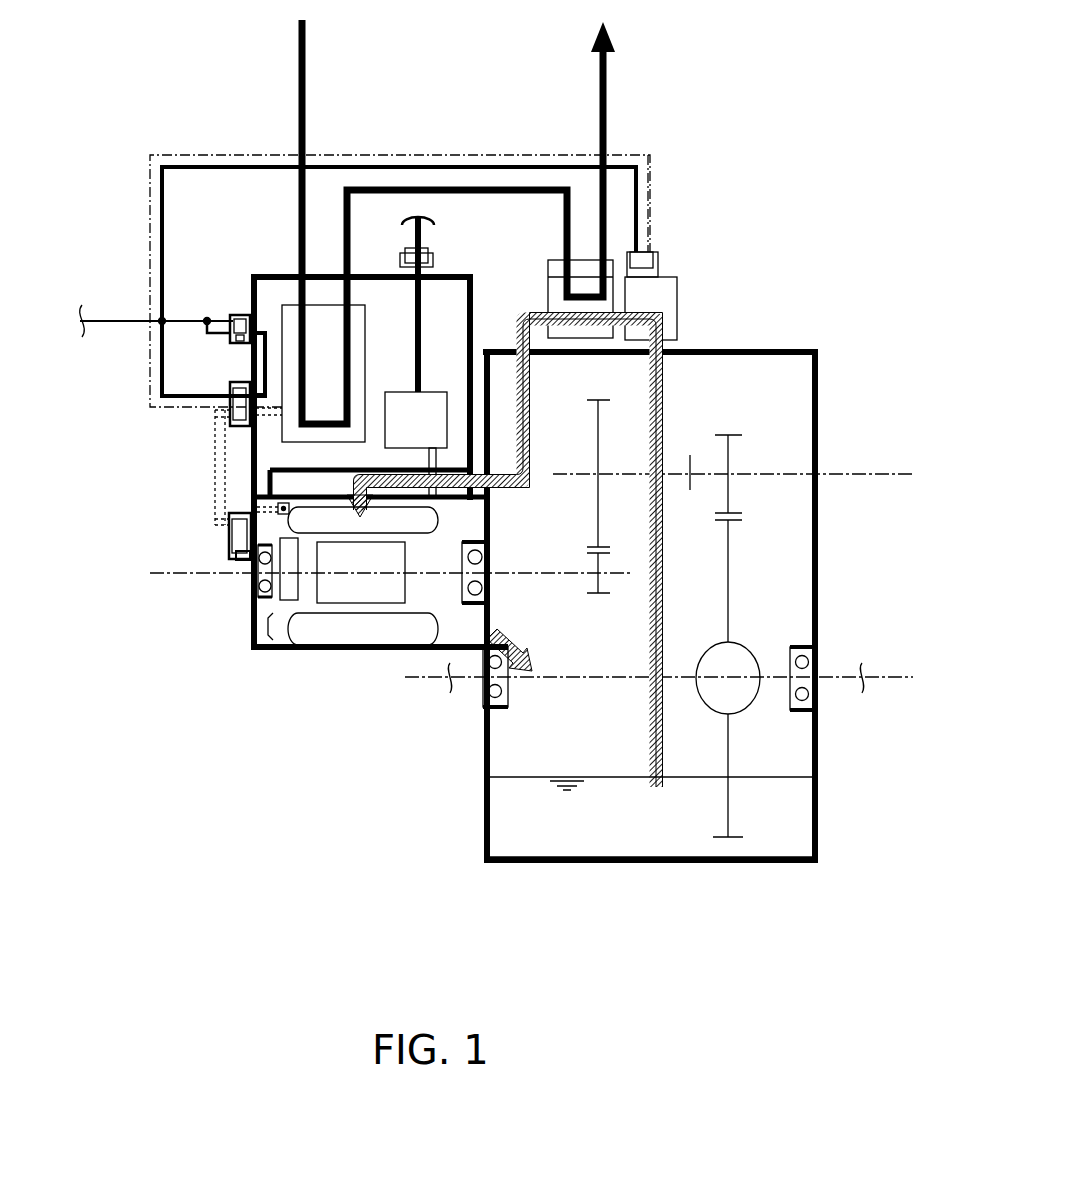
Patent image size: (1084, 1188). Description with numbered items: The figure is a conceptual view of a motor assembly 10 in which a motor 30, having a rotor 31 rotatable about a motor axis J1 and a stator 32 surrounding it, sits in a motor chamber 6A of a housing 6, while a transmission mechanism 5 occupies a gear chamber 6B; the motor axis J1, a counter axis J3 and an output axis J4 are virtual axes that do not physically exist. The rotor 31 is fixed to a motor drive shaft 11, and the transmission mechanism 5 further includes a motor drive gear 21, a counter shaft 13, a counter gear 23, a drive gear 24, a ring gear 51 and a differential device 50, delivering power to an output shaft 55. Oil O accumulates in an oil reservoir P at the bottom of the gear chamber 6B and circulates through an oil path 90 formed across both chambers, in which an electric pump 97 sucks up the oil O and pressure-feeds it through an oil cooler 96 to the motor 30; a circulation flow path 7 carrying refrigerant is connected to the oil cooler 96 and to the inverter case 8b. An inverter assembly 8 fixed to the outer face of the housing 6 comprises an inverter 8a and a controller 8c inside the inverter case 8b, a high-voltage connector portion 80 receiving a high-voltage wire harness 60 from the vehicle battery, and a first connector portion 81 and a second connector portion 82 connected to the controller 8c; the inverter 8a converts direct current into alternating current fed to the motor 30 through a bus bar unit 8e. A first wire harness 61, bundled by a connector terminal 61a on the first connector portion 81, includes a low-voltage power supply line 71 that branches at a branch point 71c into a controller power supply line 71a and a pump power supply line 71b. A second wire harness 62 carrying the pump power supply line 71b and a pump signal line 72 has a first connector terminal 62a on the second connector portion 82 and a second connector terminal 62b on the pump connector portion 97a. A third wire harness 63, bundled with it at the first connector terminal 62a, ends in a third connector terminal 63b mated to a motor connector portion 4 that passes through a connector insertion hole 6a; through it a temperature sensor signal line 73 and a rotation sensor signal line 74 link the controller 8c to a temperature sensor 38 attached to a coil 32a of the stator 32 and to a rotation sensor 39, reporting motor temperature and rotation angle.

The motor connector portion 4 is at (240, 563).
The transmission mechanism 5 is at (737, 412).
The housing 6 is at (540, 478).
The motor chamber 6A is at (258, 647).
The gear chamber 6B is at (797, 393).
The connector insertion hole 6a is at (238, 553).
The circulation flow path 7 is at (607, 72).
The inverter assembly 8 is at (250, 270).
The inverter 8a is at (442, 392).
The inverter case 8b is at (280, 302).
The controller 8c is at (314, 304).
The bus bar unit 8e is at (437, 462).
The motor assembly 10 is at (748, 228).
The motor drive shaft 11 is at (520, 640).
The counter shaft 13 is at (690, 470).
The motor drive gear 21 is at (588, 595).
The counter gear 23 is at (592, 400).
The drive gear 24 is at (738, 433).
The motor 30 is at (340, 632).
The rotor 31 is at (358, 592).
The stator 32 is at (390, 648).
The coil 32a is at (271, 622).
The temperature sensor 38 is at (262, 553).
The rotation sensor 39 is at (280, 515).
The differential device 50 is at (752, 706).
The ring gear 51 is at (735, 840).
The output shaft 55 is at (553, 677).
The high-voltage wire harness 60 is at (442, 230).
The first wire harness 61 is at (100, 335).
The connector terminal 61a is at (232, 340).
The second wire harness 62 is at (452, 150).
The first connector terminal 62a is at (235, 425).
The second connector terminal 62b is at (650, 250).
The third wire harness 63 is at (203, 487).
The third connector terminal 63b is at (232, 548).
The low-voltage power supply line 71 is at (112, 316).
The controller power supply line 71a is at (232, 312).
The pump power supply line 71b is at (190, 165).
The branch point 71c is at (160, 318).
The pump signal line 72 is at (373, 154).
The temperature sensor signal line 73 is at (222, 500).
The rotation sensor signal line 74 is at (225, 522).
The high-voltage connector portion 80 is at (406, 247).
The first connector portion 81 is at (205, 317).
The second connector portion 82 is at (245, 428).
The oil path 90 is at (672, 765).
The oil cooler 96 is at (550, 262).
The electric pump 97 is at (677, 282).
The pump connector portion 97a is at (627, 262).
The motor axis J1 is at (157, 574).
The counter axis J3 is at (905, 474).
The output axis J4 is at (905, 677).
The oil O is at (787, 833).
The oil reservoir P is at (825, 832).